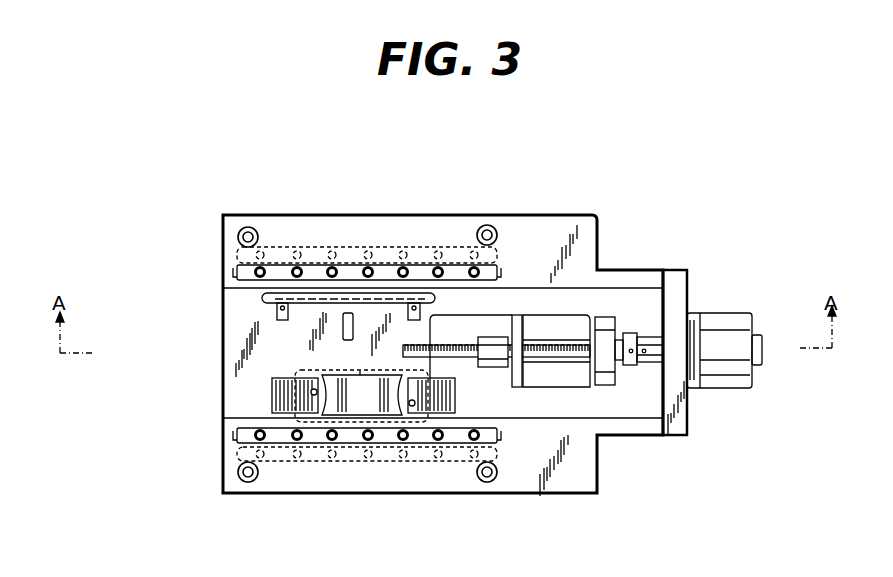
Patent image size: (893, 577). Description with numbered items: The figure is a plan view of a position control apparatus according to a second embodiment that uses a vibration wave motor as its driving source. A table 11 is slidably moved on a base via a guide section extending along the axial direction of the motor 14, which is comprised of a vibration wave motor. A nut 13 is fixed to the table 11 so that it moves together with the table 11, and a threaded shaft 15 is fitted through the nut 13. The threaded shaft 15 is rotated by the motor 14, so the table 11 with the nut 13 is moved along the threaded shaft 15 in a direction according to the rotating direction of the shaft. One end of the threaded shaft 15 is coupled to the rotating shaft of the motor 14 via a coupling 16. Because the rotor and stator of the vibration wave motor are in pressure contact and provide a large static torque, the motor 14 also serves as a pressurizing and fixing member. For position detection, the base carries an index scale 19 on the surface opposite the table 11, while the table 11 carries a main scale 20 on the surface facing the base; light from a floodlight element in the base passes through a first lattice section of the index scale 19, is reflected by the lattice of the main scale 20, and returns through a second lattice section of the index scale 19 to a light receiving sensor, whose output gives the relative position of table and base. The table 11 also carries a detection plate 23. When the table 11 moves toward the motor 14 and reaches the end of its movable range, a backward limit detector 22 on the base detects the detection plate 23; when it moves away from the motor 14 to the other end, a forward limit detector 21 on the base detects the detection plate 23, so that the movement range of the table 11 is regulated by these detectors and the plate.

The table 11 is at (568, 473).
The nut 13 is at (497, 365).
The motor 14 is at (718, 327).
The threaded shaft 15 is at (560, 348).
The coupling 16 is at (652, 357).
The index scale 19 is at (385, 412).
The main scale 20 is at (289, 471).
The forward limit detector 21 is at (427, 313).
The backward limit detector 22 is at (277, 317).
The detection plate 23 is at (343, 327).